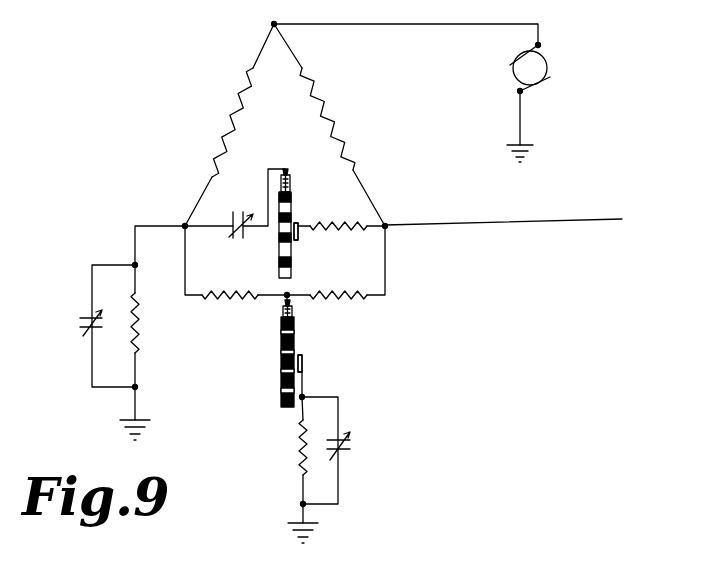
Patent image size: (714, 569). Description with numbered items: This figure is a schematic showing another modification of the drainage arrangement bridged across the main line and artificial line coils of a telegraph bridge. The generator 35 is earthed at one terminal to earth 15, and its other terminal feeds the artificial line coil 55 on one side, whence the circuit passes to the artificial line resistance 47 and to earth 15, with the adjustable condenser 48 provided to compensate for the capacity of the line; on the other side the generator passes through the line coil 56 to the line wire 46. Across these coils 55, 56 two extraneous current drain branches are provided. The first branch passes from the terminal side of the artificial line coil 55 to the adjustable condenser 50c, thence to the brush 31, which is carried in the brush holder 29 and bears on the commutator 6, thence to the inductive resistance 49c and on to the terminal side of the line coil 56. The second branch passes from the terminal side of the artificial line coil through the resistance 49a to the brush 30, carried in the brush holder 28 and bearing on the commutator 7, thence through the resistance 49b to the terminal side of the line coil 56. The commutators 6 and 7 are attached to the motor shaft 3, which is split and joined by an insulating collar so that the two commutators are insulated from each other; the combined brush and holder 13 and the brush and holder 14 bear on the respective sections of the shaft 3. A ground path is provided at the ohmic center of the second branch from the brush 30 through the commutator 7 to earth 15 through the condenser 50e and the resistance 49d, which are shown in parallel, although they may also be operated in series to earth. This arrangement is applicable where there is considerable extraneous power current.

The artificial line coil 55 is at (224, 121).
The line coil 56 is at (333, 119).
The generator 35 is at (547, 62).
The earth 15 is at (530, 156).
The line wire 46 is at (503, 214).
The adjustable condenser 50c is at (242, 235).
The brush 31 is at (288, 171).
The brush holder 29 is at (290, 184).
The commutator 6 is at (291, 201).
The combined brush and holder 13 is at (296, 240).
The shaft 3 is at (298, 229).
The inductive resistance 49c is at (350, 230).
The resistance 49a is at (235, 299).
The resistance 49b is at (345, 299).
The brush 30 is at (291, 303).
The brush holder 28 is at (292, 312).
The commutator 7 is at (280, 349).
The brush and holder 14 is at (302, 366).
The resistance 49d is at (300, 451).
The condenser 50e is at (350, 450).
The adjustable condenser 48 is at (82, 330).
The artificial line resistance 47 is at (139, 338).